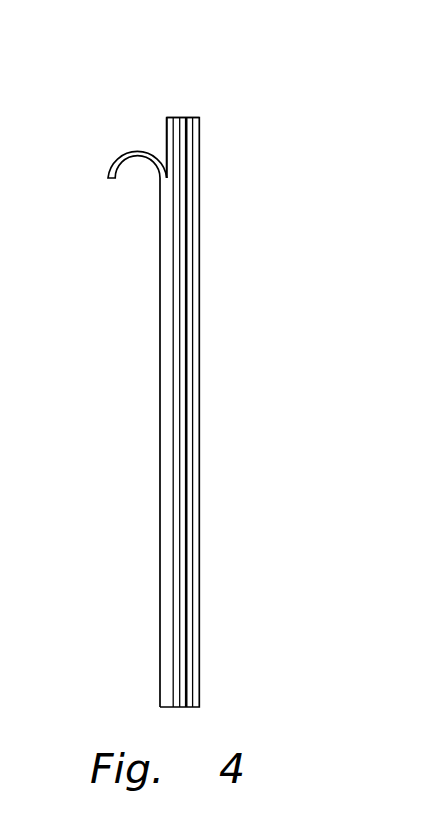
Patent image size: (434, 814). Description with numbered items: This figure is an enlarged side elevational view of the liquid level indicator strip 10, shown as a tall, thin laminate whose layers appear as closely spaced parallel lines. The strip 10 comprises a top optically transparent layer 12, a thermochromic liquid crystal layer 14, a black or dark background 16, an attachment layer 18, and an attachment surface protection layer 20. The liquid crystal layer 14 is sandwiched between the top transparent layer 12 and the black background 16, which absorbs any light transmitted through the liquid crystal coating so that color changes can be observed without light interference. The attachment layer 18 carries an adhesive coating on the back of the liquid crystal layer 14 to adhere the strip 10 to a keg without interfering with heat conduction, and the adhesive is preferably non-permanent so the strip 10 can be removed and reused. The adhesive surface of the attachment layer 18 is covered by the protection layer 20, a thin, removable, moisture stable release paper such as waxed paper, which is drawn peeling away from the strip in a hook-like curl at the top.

The liquid level indicator strip 10 is at (94, 341).
The top optically transparent layer 12 is at (200, 133).
The thermochromic liquid crystal layer 14 is at (188, 165).
The black or dark background 16 is at (180, 117).
The attachment layer 18 is at (166, 126).
The attachment surface protection layer 20 is at (107, 168).